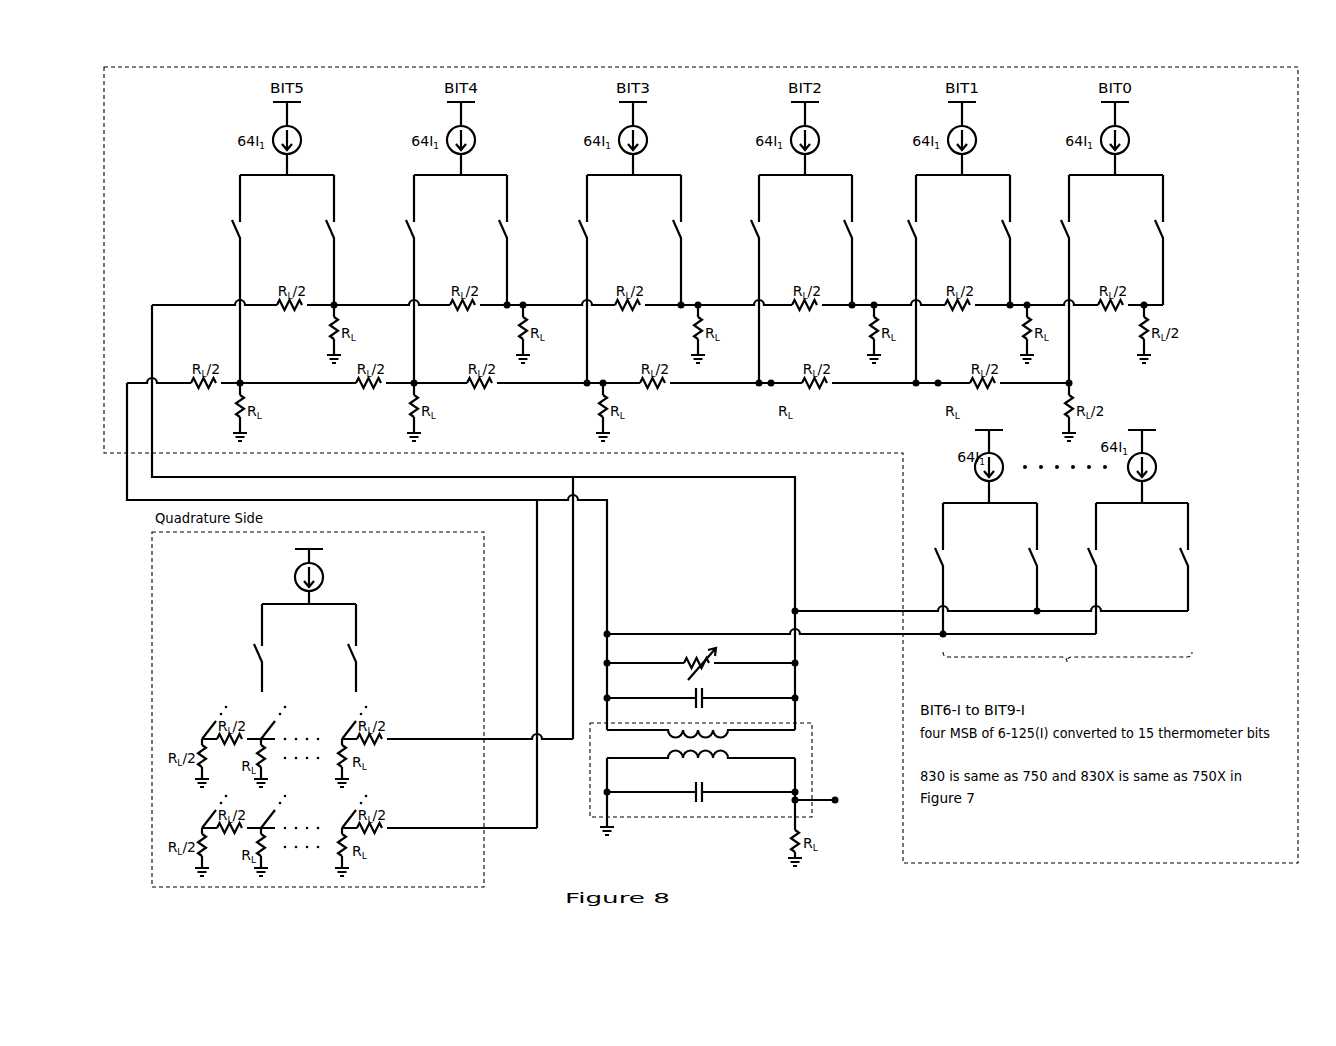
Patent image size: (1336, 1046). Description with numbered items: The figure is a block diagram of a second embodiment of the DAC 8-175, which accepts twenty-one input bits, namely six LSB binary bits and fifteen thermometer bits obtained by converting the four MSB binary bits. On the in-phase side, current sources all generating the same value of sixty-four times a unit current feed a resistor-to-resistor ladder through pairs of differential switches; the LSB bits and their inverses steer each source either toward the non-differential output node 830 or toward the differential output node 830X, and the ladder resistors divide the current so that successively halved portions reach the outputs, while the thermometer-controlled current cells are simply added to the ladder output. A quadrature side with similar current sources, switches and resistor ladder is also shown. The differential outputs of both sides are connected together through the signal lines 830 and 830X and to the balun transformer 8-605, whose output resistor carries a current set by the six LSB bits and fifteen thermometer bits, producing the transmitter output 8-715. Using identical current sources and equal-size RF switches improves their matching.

The DAC 8-175 is at (176, 40).
The output node 830 is at (793, 500).
The differential output node 830X is at (609, 533).
The balun transformer 8-605 is at (843, 773).
The transmitter output 8-715 is at (848, 834).